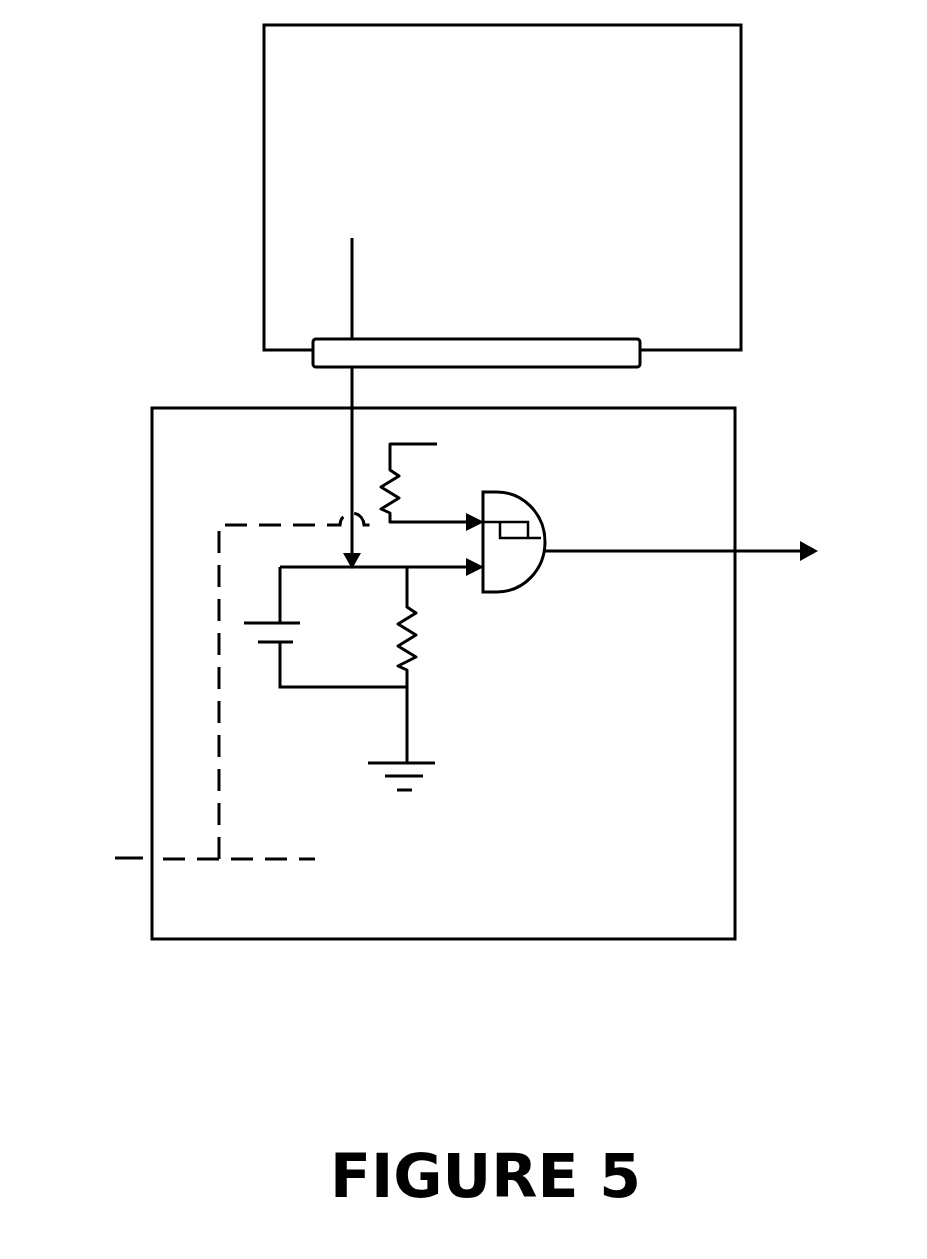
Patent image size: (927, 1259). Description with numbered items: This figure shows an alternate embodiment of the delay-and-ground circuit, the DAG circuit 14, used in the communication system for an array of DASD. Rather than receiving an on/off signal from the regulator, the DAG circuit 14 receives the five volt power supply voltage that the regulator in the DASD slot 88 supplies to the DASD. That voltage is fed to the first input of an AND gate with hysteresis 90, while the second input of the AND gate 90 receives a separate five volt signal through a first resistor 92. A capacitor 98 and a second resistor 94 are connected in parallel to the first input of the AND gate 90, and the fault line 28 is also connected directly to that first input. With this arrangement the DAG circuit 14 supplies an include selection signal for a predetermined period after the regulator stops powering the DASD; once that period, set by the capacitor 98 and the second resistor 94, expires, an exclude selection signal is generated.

The DASD slot 88 is at (741, 245).
The DAG circuit 14 is at (470, 940).
The AND gate with hysteresis 90 is at (527, 505).
The first resistor 92 is at (433, 470).
The second resistor 94 is at (415, 650).
The capacitor 98 is at (300, 622).
The fault line 28 is at (127, 860).